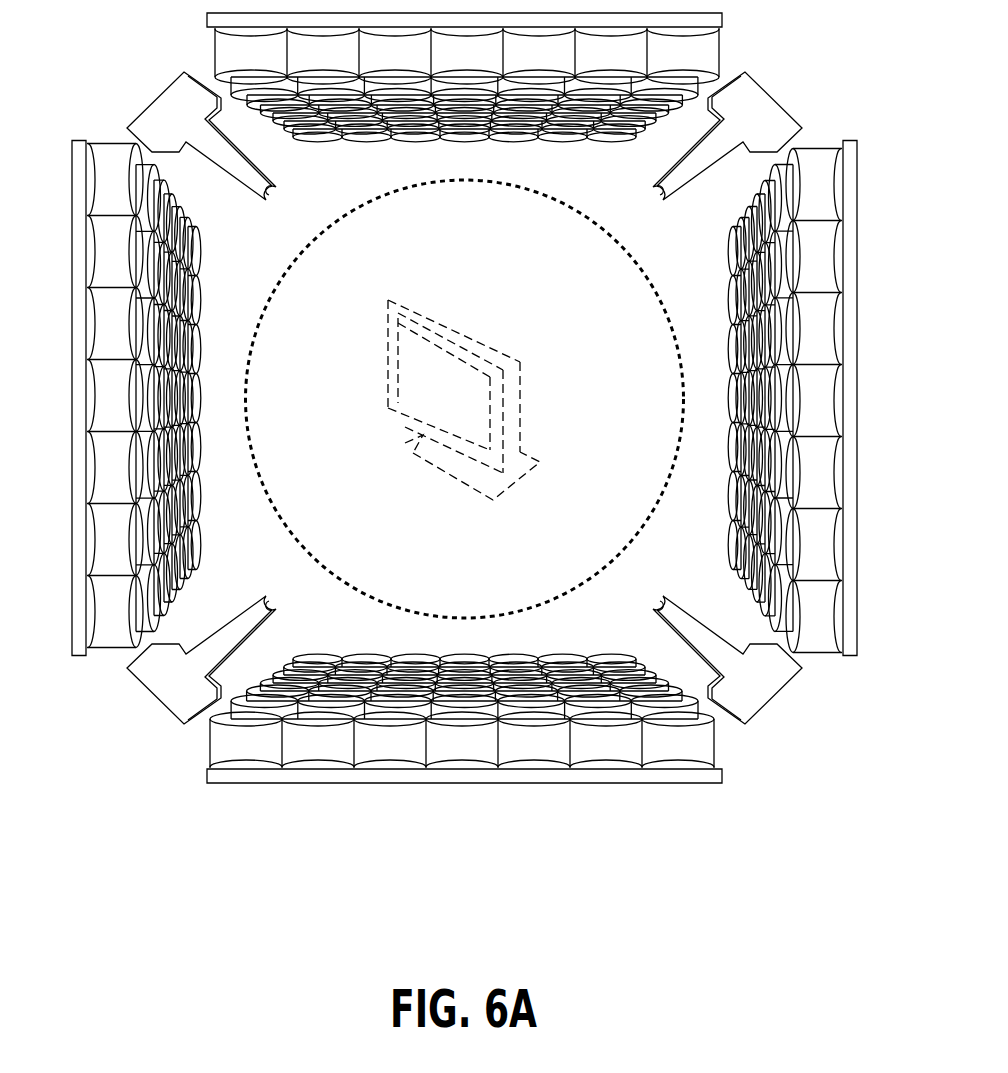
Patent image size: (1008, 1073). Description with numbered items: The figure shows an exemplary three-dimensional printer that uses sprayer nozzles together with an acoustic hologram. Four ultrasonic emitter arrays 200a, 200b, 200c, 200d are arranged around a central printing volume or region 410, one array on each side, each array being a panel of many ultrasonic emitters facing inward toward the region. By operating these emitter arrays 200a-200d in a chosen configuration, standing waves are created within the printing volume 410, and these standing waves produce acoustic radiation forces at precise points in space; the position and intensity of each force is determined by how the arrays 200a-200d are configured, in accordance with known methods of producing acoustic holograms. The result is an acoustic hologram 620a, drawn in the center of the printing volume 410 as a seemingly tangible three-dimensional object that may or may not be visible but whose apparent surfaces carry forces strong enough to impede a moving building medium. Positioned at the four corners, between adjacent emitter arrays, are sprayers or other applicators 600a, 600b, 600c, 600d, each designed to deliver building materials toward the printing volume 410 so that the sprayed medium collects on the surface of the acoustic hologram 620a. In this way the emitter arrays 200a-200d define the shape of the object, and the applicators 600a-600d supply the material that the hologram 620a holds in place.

The ultrasonic emitter array 200a is at (719, 60).
The ultrasonic emitter array 200b is at (72, 178).
The ultrasonic emitter array 200c is at (857, 178).
The ultrasonic emitter array 200d is at (719, 742).
The sprayer 600a is at (201, 136).
The sprayer 600b is at (727, 136).
The sprayer 600c is at (201, 660).
The sprayer 600d is at (727, 660).
The printing volume 410 is at (465, 399).
The acoustic hologram 620a is at (464, 400).